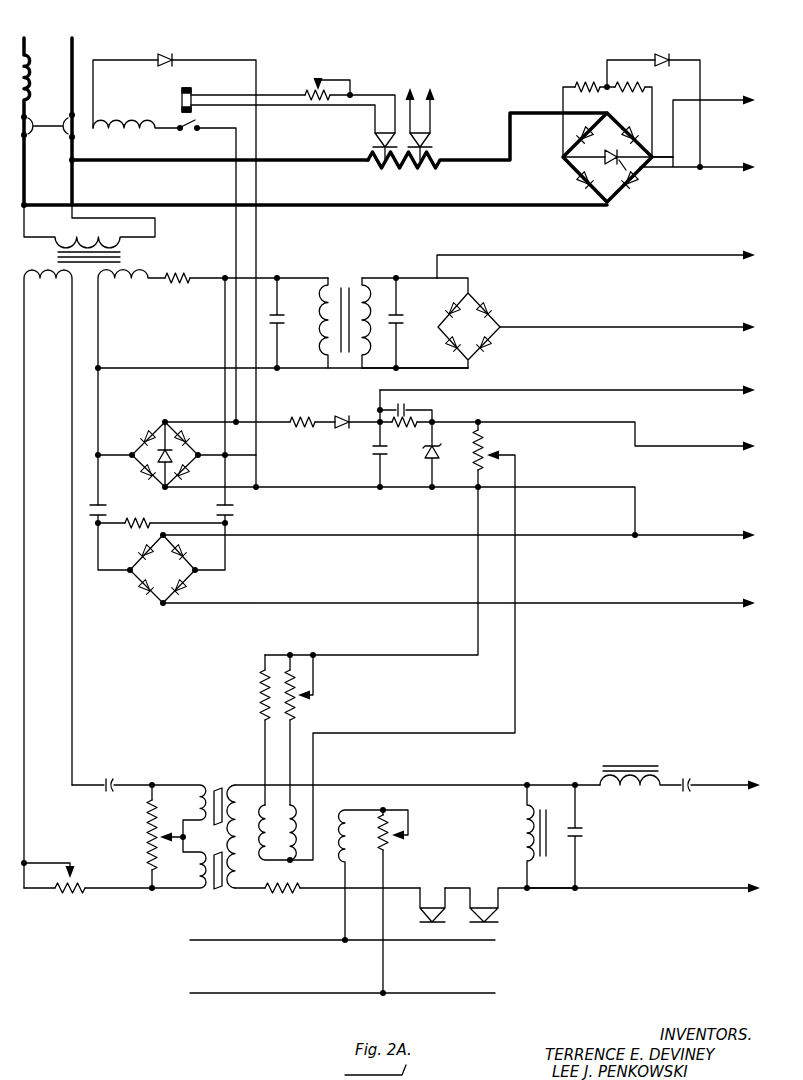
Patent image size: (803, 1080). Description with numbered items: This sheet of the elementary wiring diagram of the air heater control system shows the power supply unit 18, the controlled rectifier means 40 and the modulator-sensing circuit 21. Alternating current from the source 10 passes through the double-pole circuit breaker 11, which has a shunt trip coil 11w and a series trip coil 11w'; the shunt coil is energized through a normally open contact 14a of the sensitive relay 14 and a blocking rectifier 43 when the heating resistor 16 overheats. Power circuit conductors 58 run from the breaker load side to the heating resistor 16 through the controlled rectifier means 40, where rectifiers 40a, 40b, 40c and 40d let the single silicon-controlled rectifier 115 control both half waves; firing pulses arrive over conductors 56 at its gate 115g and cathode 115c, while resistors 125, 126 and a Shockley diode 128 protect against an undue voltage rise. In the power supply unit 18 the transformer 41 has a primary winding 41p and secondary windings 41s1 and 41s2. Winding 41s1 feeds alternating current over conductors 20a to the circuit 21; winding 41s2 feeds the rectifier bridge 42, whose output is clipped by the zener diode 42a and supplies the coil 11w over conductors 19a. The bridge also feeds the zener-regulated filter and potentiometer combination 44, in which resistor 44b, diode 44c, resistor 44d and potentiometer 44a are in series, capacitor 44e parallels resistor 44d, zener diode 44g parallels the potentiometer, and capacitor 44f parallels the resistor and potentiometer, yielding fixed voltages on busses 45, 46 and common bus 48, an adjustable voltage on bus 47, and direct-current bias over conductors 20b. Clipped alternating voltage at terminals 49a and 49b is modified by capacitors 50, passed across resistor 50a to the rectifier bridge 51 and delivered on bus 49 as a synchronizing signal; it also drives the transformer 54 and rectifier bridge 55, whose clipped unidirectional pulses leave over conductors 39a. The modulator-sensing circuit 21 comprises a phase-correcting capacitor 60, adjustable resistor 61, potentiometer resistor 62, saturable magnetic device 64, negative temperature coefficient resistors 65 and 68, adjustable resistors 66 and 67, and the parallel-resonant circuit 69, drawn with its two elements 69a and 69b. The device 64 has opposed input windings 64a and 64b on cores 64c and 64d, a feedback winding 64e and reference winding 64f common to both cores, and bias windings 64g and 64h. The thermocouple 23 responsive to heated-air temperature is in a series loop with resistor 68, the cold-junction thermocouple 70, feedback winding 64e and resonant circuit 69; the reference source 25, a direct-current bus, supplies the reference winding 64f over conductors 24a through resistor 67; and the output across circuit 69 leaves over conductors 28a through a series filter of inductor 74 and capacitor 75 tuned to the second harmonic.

The source of alternating current 10 is at (65, 37).
The double-pole circuit breaker 11 is at (40, 126).
The shunt trip coil 11w is at (136, 113).
The series trip coil 11w' is at (47, 121).
The sensitive relay 14 is at (200, 110).
The normally open contact 14a is at (190, 135).
The heating resistor 16 is at (421, 163).
The power supply unit 18 is at (281, 354).
The conductors 19a is at (256, 245).
The conductors 20a is at (68, 544).
The conductors 20b is at (462, 574).
The modulator-sensing circuit 21 is at (191, 737).
The thermocouple 23 is at (426, 141).
The conductors 24a is at (354, 900).
The reference source 25 is at (458, 940).
The conductors 28a is at (750, 792).
The conductors 39a is at (626, 260).
The controlled rectifier means 40 is at (595, 157).
The rectifier 40a is at (574, 137).
The rectifier 40b is at (648, 112).
The rectifier 40c is at (632, 186).
The rectifier 40d is at (586, 184).
The transformer 41 is at (56, 256).
The primary winding 41p is at (106, 239).
The secondary winding 41s1 is at (48, 579).
The secondary winding 41s2 is at (213, 387).
The rectifier bridge 42 is at (138, 438).
The zener diode 42a is at (180, 464).
The blocking rectifier 43 is at (171, 60).
The zener-regulated filter and potentiometer combination 44 is at (258, 441).
The potentiometer 44a is at (484, 436).
The resistor 44b is at (290, 414).
The diode 44c is at (360, 400).
The resistor 44d is at (389, 428).
The capacitor 44e is at (416, 410).
The capacitor 44f is at (377, 456).
The zener diode 44g is at (432, 458).
The bus 45 is at (537, 392).
The bus 46 is at (616, 420).
The bus 47 is at (519, 464).
The bus 48 is at (570, 485).
The bus 49 is at (680, 600).
The terminal 49a is at (96, 455).
The terminal 49b is at (256, 450).
The capacitors 50 is at (214, 514).
The resistor 50a is at (146, 530).
The rectifier bridge 51 is at (190, 582).
The transformer 54 is at (360, 288).
The rectifier bridge 55 is at (596, 323).
The conductors 56 is at (724, 104).
The conductors 58 is at (352, 204).
The phase-correcting capacitor 60 is at (108, 782).
The adjustable resistor 61 is at (80, 883).
The potentiometer resistor 62 is at (146, 839).
The saturable magnetic device 64 is at (413, 835).
The input winding 64a is at (198, 809).
The input winding 64b is at (166, 874).
The core 64c is at (195, 791).
The core 64d is at (215, 892).
The feedback winding 64e is at (250, 778).
The reference winding 64f is at (337, 810).
The bias winding 64g is at (304, 864).
The bias winding 64h is at (263, 858).
The negative temperature coefficient resistor 65 is at (260, 700).
The adjustable resistor 66 is at (292, 704).
The adjustable resistor 67 is at (388, 842).
The negative temperature coefficient resistor 68 is at (288, 900).
The parallel-resonant circuit 69 is at (551, 874).
The inductor 69a is at (526, 842).
The capacitor 69b is at (584, 830).
The reference or cold-junction thermocouple 70 is at (499, 912).
The inductor 74 is at (622, 786).
The capacitor 75 is at (685, 776).
The silicon-controlled rectifier 115 is at (594, 152).
The cathode 115c is at (652, 155).
The gate 115g is at (618, 204).
The resistor 125 is at (582, 78).
The resistor 126 is at (646, 80).
The Shockley diode 128 is at (690, 55).